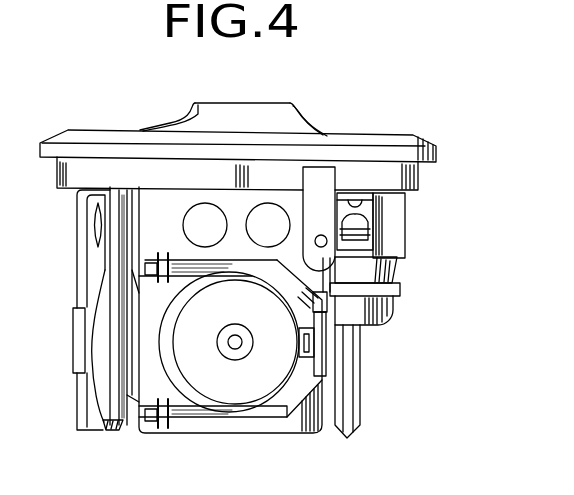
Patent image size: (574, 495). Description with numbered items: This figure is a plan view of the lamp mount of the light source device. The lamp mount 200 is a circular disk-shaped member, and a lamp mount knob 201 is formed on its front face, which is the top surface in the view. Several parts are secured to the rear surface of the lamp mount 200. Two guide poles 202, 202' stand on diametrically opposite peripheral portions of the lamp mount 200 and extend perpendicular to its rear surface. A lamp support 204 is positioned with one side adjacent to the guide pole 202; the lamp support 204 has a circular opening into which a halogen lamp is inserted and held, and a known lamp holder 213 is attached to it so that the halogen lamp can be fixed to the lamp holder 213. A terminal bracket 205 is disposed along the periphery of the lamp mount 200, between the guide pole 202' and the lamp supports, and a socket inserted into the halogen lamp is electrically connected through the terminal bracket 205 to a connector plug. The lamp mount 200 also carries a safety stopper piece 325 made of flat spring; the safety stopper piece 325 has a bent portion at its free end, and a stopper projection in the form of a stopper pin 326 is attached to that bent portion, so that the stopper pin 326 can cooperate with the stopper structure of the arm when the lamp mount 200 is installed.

The lamp mount 200 is at (419, 177).
The lamp mount knob 201 is at (254, 113).
The guide pole 202 is at (106, 339).
The guide pole 202' is at (381, 381).
The lamp support 204 is at (213, 428).
The terminal bracket 205 is at (383, 270).
The lamp holder 213 is at (288, 402).
The safety stopper piece 325 is at (322, 178).
The stopper pin 326 is at (328, 238).